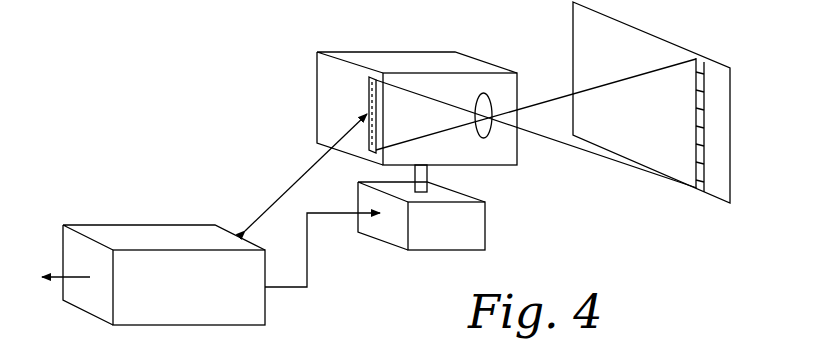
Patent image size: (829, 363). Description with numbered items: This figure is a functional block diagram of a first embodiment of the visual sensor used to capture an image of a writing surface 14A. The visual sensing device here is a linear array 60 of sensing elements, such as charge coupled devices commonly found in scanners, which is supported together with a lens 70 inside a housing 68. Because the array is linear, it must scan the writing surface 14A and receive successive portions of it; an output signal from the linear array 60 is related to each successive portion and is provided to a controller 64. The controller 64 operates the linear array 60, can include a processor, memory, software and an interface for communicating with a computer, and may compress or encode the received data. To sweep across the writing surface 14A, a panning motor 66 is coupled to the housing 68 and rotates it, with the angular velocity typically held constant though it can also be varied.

The writing surface 14A is at (715, 185).
The linear array of sensing elements 60 is at (369, 88).
The controller 64 is at (197, 325).
The panning motor 66 is at (485, 248).
The housing 68 is at (433, 53).
The lens 70 is at (484, 93).